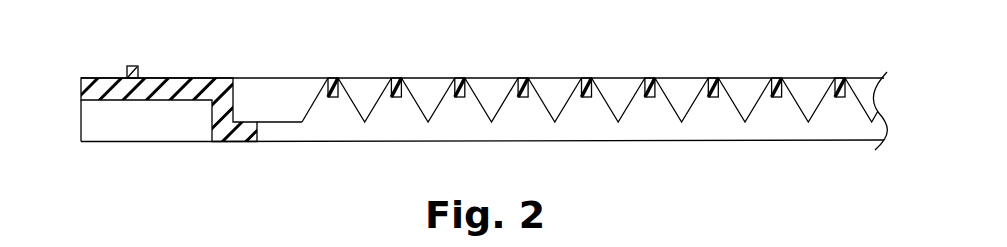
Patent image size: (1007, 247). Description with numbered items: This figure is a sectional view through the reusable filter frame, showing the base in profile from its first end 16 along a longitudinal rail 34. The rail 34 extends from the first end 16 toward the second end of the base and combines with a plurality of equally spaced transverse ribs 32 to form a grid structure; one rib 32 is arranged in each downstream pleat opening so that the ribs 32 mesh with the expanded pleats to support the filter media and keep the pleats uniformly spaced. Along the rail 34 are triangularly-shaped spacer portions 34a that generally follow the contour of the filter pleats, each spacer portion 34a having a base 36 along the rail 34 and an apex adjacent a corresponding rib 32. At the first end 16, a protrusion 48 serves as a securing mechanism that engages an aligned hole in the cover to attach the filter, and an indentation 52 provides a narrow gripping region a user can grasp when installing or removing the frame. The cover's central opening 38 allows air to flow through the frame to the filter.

The first end 16 is at (80, 132).
The indentation 52 is at (87, 115).
The protrusion 48 is at (133, 65).
The longitudinal rail 34 is at (575, 139).
The base 36 is at (333, 120).
The spacer portion 34a is at (318, 102).
The central opening 38 is at (349, 97).
The transverse rib 32 is at (333, 77).